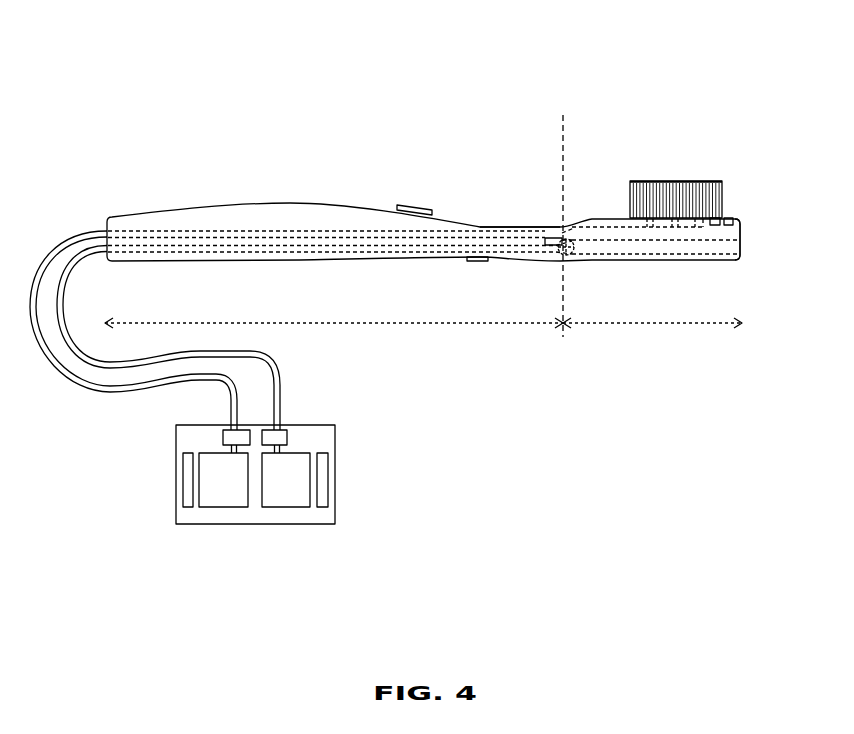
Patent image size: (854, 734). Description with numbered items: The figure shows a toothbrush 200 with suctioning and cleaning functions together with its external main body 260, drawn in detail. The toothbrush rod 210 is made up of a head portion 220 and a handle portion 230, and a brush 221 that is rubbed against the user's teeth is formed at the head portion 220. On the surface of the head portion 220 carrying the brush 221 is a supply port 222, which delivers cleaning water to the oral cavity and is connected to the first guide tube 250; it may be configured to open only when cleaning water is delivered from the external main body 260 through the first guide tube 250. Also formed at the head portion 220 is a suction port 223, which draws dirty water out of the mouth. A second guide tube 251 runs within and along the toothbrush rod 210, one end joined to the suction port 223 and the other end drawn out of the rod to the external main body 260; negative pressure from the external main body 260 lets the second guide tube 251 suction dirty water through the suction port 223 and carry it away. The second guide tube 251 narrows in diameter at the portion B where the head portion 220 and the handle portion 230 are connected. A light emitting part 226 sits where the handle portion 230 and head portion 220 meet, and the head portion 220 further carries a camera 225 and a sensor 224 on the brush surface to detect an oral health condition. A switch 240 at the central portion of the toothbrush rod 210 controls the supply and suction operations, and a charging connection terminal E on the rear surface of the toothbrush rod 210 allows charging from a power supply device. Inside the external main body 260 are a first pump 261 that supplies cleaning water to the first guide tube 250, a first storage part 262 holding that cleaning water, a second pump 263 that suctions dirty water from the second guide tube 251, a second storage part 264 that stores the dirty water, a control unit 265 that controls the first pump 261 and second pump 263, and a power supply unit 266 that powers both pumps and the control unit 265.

The toothbrush with suctioning and cleaning functions 200 is at (809, 46).
The toothbrush rod 210 is at (199, 178).
The head portion 220 is at (652, 235).
The brush 221 is at (677, 181).
The supply port 222 is at (650, 218).
The suction port 223 is at (740, 247).
The sensor 224 is at (715, 218).
The camera 225 is at (733, 217).
The light emitting part 226 is at (550, 238).
The handle portion 230 is at (334, 336).
The switch 240 is at (415, 206).
The first guide tube 250 is at (483, 227).
The second guide tube 251 is at (670, 255).
The external main body 260 is at (337, 473).
The first pump 261 is at (223, 439).
The first storage part 262 is at (220, 508).
The second pump 263 is at (288, 440).
The second storage part 264 is at (285, 508).
The control unit 265 is at (182, 478).
The power supply unit 266 is at (322, 452).
The charging connection terminal E is at (481, 261).
The portion where the head portion and the handle portion are connected B is at (575, 253).